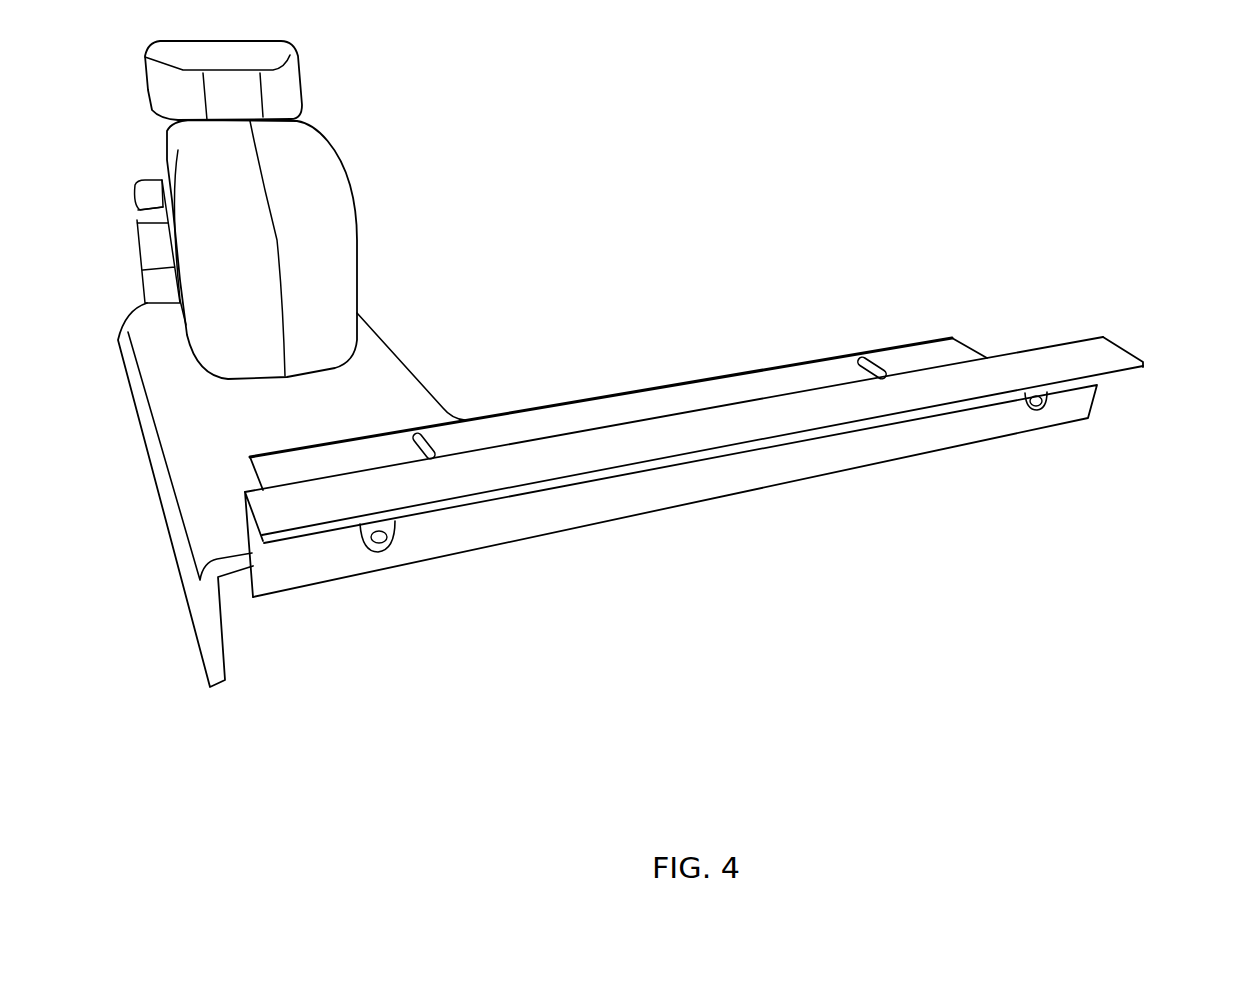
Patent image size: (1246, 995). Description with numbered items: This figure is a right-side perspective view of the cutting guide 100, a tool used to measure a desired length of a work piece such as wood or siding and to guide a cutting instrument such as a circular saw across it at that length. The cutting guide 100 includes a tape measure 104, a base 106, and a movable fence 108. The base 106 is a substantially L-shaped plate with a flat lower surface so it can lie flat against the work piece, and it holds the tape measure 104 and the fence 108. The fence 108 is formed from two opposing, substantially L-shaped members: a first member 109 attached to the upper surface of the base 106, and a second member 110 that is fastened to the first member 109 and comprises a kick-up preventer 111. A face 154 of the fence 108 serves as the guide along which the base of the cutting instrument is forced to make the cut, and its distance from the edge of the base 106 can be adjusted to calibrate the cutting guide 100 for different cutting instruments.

The cutting guide 100 is at (615, 165).
The tape measure 104 is at (379, 190).
The base 106 is at (378, 362).
The movable fence 108 is at (1082, 306).
The first member 109 is at (973, 346).
The second member 110 is at (1148, 366).
The kick-up preventer 111 is at (782, 410).
The face 154 is at (694, 478).